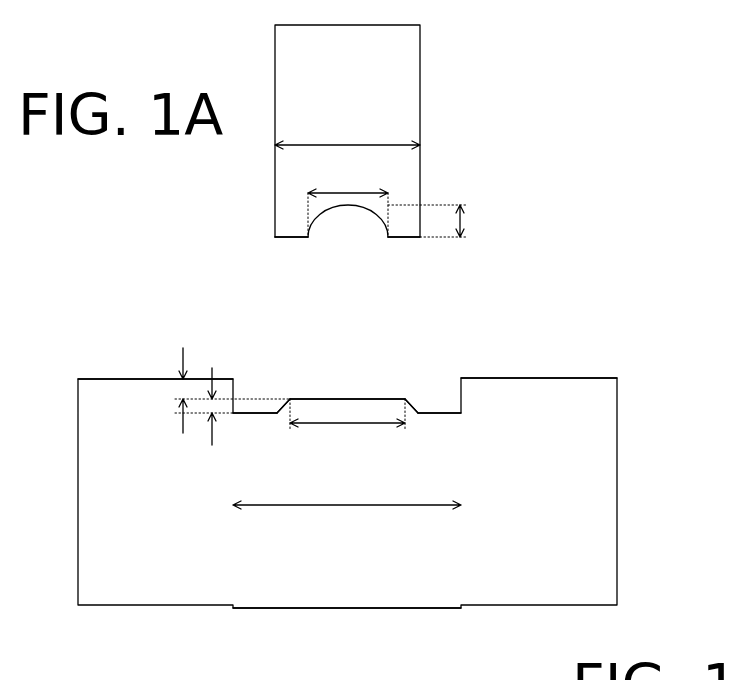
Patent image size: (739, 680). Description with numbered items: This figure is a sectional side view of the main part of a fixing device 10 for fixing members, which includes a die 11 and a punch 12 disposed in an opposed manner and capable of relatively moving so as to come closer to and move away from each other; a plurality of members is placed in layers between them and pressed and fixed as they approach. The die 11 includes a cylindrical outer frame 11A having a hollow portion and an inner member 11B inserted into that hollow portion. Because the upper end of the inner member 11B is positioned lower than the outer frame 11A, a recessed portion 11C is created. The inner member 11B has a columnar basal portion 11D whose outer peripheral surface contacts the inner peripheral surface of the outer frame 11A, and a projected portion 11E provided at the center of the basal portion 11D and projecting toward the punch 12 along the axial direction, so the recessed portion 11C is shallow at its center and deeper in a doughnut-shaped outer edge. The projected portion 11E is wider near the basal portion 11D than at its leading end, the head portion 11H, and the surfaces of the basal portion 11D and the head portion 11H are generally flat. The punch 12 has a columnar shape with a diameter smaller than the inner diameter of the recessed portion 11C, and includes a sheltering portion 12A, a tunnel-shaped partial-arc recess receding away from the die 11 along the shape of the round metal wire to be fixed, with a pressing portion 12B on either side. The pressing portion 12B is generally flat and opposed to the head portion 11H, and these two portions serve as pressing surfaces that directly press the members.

The fixing device 10 is at (600, 108).
The die 11 is at (616, 332).
The outer frame 11A is at (157, 379).
The inner member 11B is at (413, 610).
The recessed portion 11C is at (438, 387).
The basal portion 11D is at (256, 410).
The projected portion 11E is at (303, 407).
The head portion 11H is at (344, 398).
The punch 12 is at (420, 115).
The sheltering portion 12A is at (347, 218).
The pressing portion 12B is at (292, 238).